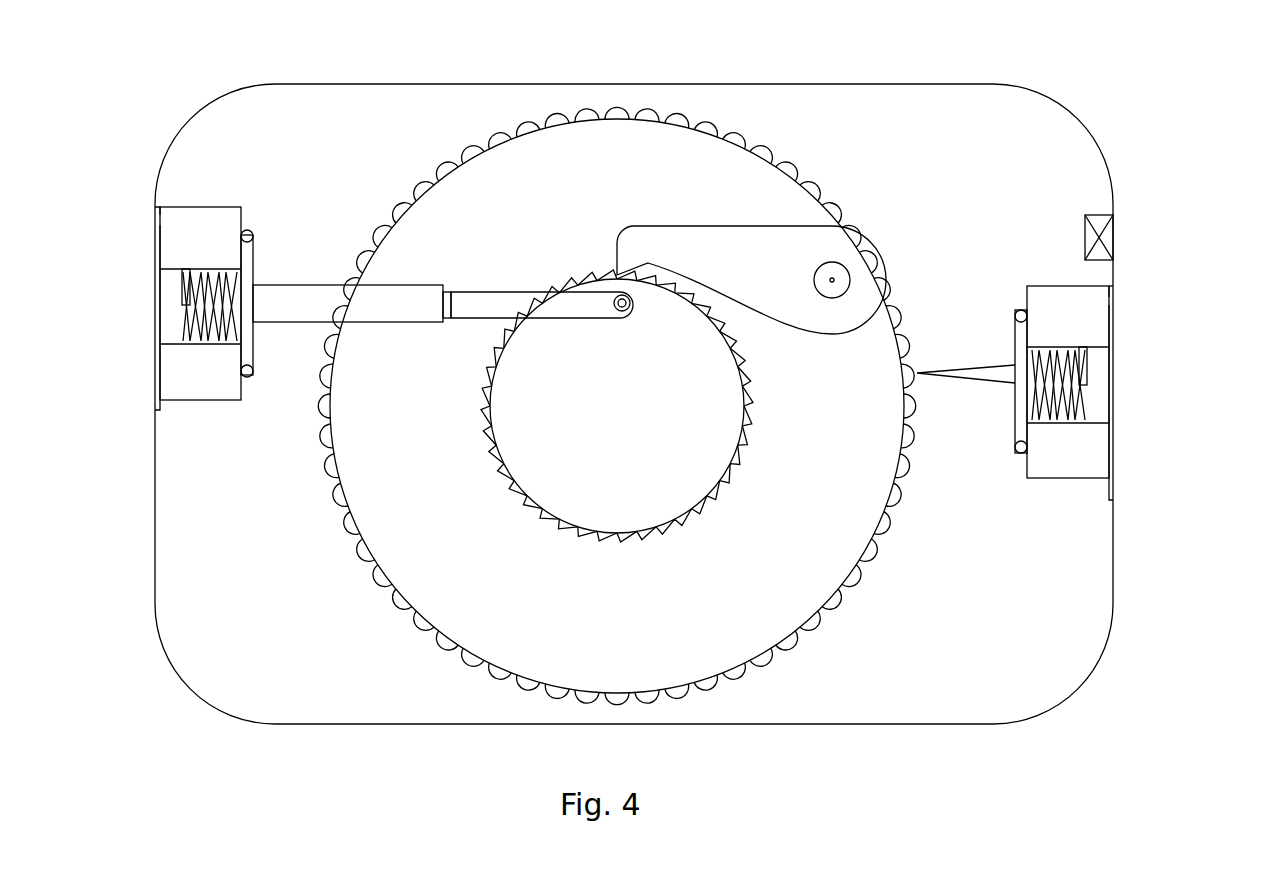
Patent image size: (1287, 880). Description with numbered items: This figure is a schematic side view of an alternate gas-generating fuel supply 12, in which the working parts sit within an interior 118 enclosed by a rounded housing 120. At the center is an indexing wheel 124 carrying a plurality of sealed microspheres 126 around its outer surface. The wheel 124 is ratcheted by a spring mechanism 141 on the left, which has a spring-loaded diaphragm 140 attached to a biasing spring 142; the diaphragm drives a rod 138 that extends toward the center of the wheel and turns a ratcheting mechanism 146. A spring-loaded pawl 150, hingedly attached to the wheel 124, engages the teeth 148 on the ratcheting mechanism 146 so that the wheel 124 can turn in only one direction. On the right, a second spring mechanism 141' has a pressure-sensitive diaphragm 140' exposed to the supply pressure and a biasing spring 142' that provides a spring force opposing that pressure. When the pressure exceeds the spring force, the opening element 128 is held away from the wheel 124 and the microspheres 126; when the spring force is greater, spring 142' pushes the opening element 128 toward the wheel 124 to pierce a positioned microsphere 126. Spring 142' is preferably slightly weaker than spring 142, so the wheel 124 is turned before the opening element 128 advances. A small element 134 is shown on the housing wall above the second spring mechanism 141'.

The drive assembly 12 is at (652, 408).
The housing interior 118 is at (272, 136).
The housing 120 is at (592, 424).
The indexing wheel 124 is at (749, 434).
The sealed microspheres 126 is at (709, 374).
The opening element 128 is at (1060, 463).
The sensor 134 is at (1108, 238).
The rod 138 is at (424, 540).
The spring-loaded diaphragm 140 is at (154, 245).
The spring mechanism 141 is at (150, 362).
The biasing spring 142 is at (156, 305).
The pressure-sensitive diaphragm 140' is at (1132, 398).
The second spring mechanism 141' is at (1109, 408).
The biasing spring 142' is at (1128, 388).
The ratcheting mechanism 146 is at (625, 480).
The teeth 148 is at (602, 291).
The spring-loaded pawl 150 is at (766, 186).